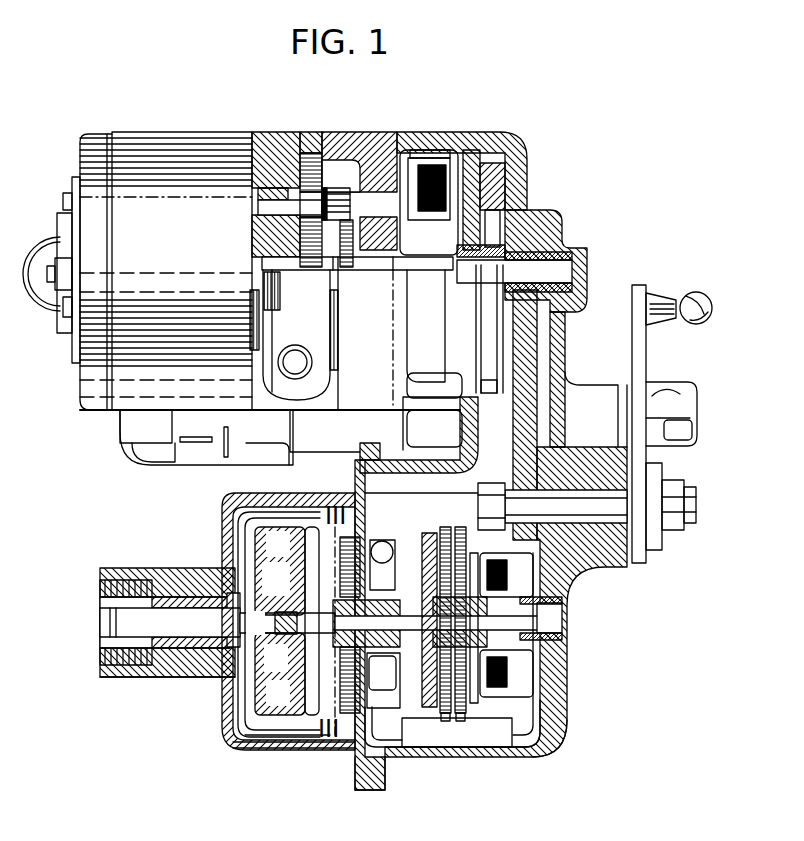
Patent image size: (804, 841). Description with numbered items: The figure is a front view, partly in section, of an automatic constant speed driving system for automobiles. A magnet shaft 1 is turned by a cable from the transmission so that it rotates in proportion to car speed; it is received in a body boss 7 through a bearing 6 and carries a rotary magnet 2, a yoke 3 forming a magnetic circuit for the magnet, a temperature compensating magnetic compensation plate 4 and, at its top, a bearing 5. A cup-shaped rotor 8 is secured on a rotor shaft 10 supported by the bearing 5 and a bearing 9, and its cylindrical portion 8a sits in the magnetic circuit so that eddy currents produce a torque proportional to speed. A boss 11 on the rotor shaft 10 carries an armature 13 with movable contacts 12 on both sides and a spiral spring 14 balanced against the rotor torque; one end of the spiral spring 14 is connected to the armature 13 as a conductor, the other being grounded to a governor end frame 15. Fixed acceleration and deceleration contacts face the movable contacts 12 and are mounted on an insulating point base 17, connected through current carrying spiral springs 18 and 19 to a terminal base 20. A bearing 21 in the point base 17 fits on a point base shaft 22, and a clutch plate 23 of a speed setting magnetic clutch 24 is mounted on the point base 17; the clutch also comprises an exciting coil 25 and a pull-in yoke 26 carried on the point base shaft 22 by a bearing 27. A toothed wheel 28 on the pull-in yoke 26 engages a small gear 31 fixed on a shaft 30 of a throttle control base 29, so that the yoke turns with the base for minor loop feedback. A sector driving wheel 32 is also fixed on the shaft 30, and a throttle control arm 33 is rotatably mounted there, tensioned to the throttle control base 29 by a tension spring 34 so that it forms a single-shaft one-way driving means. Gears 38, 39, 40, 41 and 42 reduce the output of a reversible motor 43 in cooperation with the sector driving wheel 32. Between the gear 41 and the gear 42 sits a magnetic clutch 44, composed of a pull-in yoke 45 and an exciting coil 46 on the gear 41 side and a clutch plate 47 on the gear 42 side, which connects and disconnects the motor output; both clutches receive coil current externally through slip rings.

The magnet shaft 1 is at (100, 627).
The rotary magnet 2 is at (255, 690).
The yoke 3 is at (240, 727).
The temperature compensating magnetic compensation plate 4 is at (276, 657).
The bearing 5 is at (276, 620).
The bearing 6 is at (153, 677).
The body boss 7 is at (164, 577).
The cup-shaped rotor 8 is at (325, 750).
The cylindrical portion 8a is at (291, 750).
The bearing 9 is at (432, 716).
The rotor shaft 10 is at (367, 631).
The boss 11 is at (281, 580).
The movable contacts 12 is at (380, 542).
The armature 13 is at (332, 500).
The spiral spring 14 is at (373, 795).
The governor end frame 15 is at (428, 715).
The point base 17 is at (437, 720).
The current carrying spiral spring 18 is at (470, 713).
The current carrying spiral spring 19 is at (483, 722).
The terminal base 20 is at (513, 757).
The bearing 21 is at (432, 542).
The point base shaft 22 is at (553, 617).
The clutch plate 23 is at (545, 750).
The speed setting magnetic clutch 24 is at (545, 675).
The exciting coil 25 is at (550, 694).
The pull-in yoke 26 is at (545, 608).
The bearing 27 is at (550, 643).
The toothed wheel 28 is at (543, 728).
The throttle control base 29 is at (638, 560).
The shaft 30 is at (598, 572).
The small gear 31 is at (506, 468).
The sector driving wheel 32 is at (527, 333).
The throttle control arm 33 is at (648, 341).
The tension spring 34 is at (690, 394).
The gear 38 is at (310, 266).
The gear 39 is at (310, 152).
The gear 40 is at (345, 188).
The gear 41 is at (352, 215).
The gear 42 is at (566, 240).
The reversible motor 43 is at (167, 133).
The magnetic clutch 44 is at (466, 152).
The pull-in yoke 45 is at (437, 165).
The exciting coil 46 is at (420, 158).
The clutch plate 47 is at (505, 235).